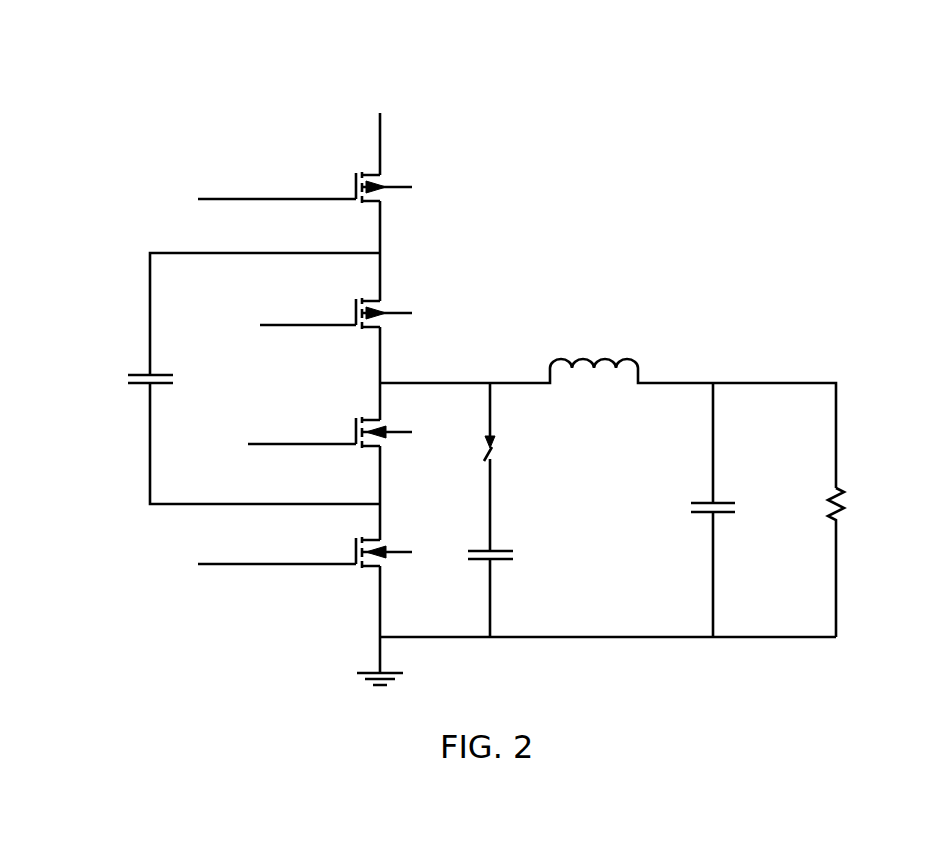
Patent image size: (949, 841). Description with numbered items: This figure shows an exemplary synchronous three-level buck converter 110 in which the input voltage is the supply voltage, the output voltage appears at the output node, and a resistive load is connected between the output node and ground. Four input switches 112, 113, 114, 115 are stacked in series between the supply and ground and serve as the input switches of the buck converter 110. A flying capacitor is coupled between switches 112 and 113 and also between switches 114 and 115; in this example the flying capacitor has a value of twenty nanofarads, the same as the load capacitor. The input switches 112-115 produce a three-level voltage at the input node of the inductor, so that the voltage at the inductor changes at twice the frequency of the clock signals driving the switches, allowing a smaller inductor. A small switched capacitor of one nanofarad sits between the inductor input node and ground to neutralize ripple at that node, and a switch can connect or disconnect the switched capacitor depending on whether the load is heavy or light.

The buck converter 110 is at (662, 252).
The input switch 112 is at (404, 178).
The input switch 113 is at (410, 310).
The input switch 114 is at (400, 441).
The input switch 115 is at (400, 561).